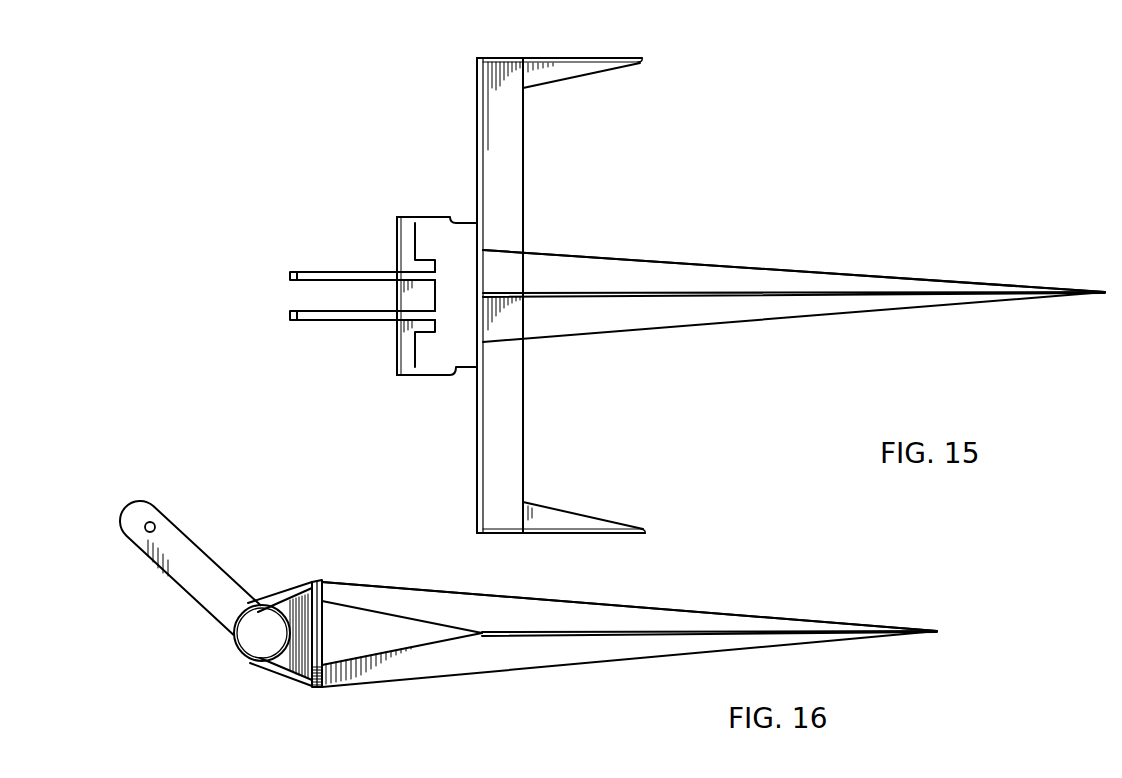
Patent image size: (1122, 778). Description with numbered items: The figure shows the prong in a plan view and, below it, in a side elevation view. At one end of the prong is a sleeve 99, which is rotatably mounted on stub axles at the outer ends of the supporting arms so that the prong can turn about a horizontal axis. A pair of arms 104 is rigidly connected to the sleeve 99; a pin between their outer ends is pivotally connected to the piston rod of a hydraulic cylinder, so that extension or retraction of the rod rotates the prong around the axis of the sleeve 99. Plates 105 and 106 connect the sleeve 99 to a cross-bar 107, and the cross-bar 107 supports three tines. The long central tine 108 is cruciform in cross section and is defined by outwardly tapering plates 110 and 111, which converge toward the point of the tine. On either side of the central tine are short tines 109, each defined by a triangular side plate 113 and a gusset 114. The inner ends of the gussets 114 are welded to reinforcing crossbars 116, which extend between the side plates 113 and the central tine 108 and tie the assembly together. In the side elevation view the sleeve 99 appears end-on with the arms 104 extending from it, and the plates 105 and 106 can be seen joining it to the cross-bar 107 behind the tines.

In FIG. 15, the sleeve 99 is at (397, 368).
In FIG. 16, the sleeve 99 is at (248, 658).
In FIG. 15, the arms 104 is at (323, 272).
In FIG. 16, the arms 104 is at (187, 548).
In FIG. 15, the plate 105 is at (457, 240).
In FIG. 16, the plate 105 is at (278, 592).
In FIG. 16, the plate 106 is at (313, 645).
In FIG. 15, the cross-bar 107 is at (478, 430).
In FIG. 16, the cross-bar 107 is at (323, 613).
In FIG. 15, the long central tine 108 is at (677, 327).
In FIG. 16, the long central tine 108 is at (937, 631).
In FIG. 15, the short tines 109 is at (643, 60).
In FIG. 16, the short tines 109 is at (482, 633).
In FIG. 15, the outwardly tapering plate 110 is at (736, 268).
In FIG. 16, the outwardly tapering plate 110 is at (722, 630).
In FIG. 15, the outwardly tapering plate 111 is at (822, 290).
In FIG. 16, the outwardly tapering plate 111 is at (650, 617).
In FIG. 15, the triangular side plates 113 is at (540, 57).
In FIG. 15, the gussets 114 is at (553, 80).
In FIG. 15, the reinforcing crossbars 116 is at (512, 203).